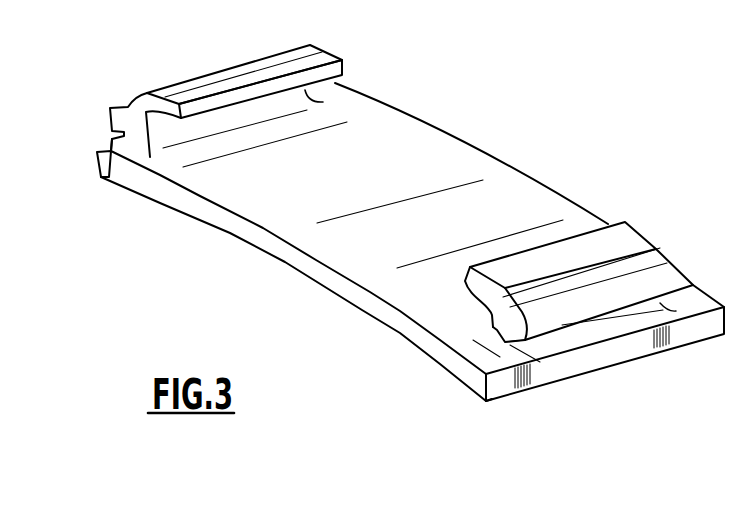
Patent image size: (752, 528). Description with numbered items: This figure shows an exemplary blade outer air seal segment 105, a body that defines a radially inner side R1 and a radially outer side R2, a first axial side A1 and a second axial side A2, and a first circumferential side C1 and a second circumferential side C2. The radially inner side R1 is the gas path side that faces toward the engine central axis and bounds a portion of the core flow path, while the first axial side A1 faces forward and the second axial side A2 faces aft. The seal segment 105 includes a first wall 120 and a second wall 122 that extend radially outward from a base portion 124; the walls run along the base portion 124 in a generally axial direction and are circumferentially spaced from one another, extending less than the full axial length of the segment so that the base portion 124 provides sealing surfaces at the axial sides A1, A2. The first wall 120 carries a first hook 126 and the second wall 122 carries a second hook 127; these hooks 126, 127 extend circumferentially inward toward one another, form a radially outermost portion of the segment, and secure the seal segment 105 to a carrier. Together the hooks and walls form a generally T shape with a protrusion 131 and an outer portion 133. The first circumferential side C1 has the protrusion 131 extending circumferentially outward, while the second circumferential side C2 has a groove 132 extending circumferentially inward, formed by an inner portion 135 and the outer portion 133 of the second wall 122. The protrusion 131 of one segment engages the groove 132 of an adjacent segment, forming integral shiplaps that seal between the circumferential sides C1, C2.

The BOAS seal segment 105 is at (474, 72).
The first wall 120 is at (110, 178).
The second wall 122 is at (496, 331).
The base portion 124 is at (378, 313).
The first hook 126 is at (178, 101).
The second hook 127 is at (623, 237).
The protrusion 131 is at (110, 113).
The groove 132 is at (516, 347).
The outer portion 133 is at (562, 325).
The inner portion 135 is at (501, 386).
The first axial side A1 is at (183, 201).
The second axial side A2 is at (494, 157).
The first circumferential side C1 is at (112, 139).
The second circumferential side C2 is at (487, 402).
The radially inner side R1 is at (285, 264).
The radially outer side R2 is at (257, 229).